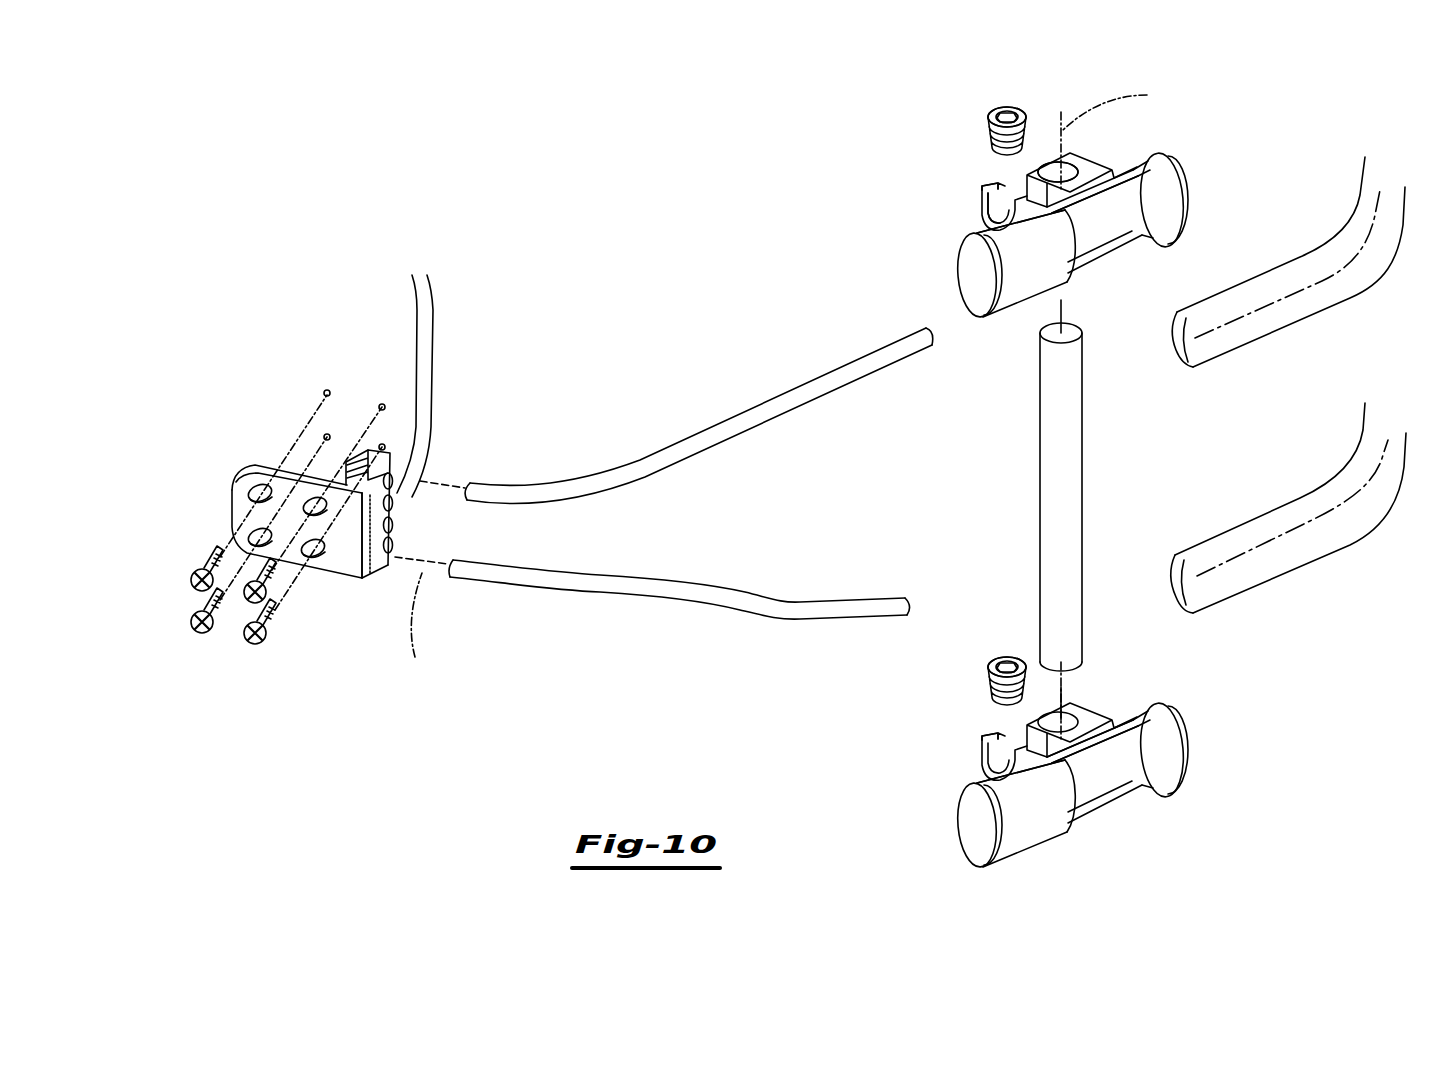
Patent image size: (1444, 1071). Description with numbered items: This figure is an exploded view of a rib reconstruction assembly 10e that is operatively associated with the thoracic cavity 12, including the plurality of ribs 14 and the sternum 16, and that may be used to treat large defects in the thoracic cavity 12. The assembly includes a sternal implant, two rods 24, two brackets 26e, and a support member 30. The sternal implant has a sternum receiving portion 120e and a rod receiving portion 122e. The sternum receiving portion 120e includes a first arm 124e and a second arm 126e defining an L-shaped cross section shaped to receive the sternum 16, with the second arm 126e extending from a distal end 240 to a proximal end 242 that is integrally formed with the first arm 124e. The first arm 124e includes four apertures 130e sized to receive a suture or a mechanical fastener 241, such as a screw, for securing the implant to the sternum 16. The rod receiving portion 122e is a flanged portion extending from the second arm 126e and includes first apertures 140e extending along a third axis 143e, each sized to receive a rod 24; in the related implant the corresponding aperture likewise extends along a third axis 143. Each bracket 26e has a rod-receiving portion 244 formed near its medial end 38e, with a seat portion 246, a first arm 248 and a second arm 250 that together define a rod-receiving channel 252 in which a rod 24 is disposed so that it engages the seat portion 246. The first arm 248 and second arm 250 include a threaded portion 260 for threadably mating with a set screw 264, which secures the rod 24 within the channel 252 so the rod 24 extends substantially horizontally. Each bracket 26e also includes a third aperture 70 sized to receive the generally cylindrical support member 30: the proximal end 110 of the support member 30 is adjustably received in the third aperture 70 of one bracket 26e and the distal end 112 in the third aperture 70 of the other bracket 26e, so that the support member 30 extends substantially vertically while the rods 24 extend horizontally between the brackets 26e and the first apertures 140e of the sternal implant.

The rib reconstruction assembly 10e is at (492, 209).
The thoracic cavity 12 is at (808, 649).
The ribs 14 is at (1317, 260).
The sternum 16 is at (428, 313).
The rod 24 is at (770, 410).
The bracket 26e is at (1044, 140).
The support member 30 is at (1092, 516).
The medial end 38e is at (975, 272).
The third aperture 70 is at (1076, 160).
The proximal end 110 is at (1072, 322).
The distal end 112 is at (1072, 674).
The sternum receiving portion 120e is at (317, 590).
The rod receiving portion 122e is at (393, 440).
The first arm 124e is at (290, 467).
The second arm 126e is at (362, 458).
The apertures 130e is at (250, 490).
The first aperture 140e is at (392, 532).
The third axis 143 is at (1121, 107).
The third axis 143e is at (433, 627).
The distal end 240 is at (367, 580).
The mechanical fastener 241 is at (195, 618).
The proximal end 242 is at (362, 478).
The rod-receiving portion 244 is at (968, 183).
The seat portion 246 is at (987, 767).
The first arm 248 is at (993, 733).
The second arm 250 is at (1053, 735).
The rod-receiving channel 252 is at (987, 213).
The threaded portion 260 is at (1003, 187).
The set screw 264 is at (1003, 108).